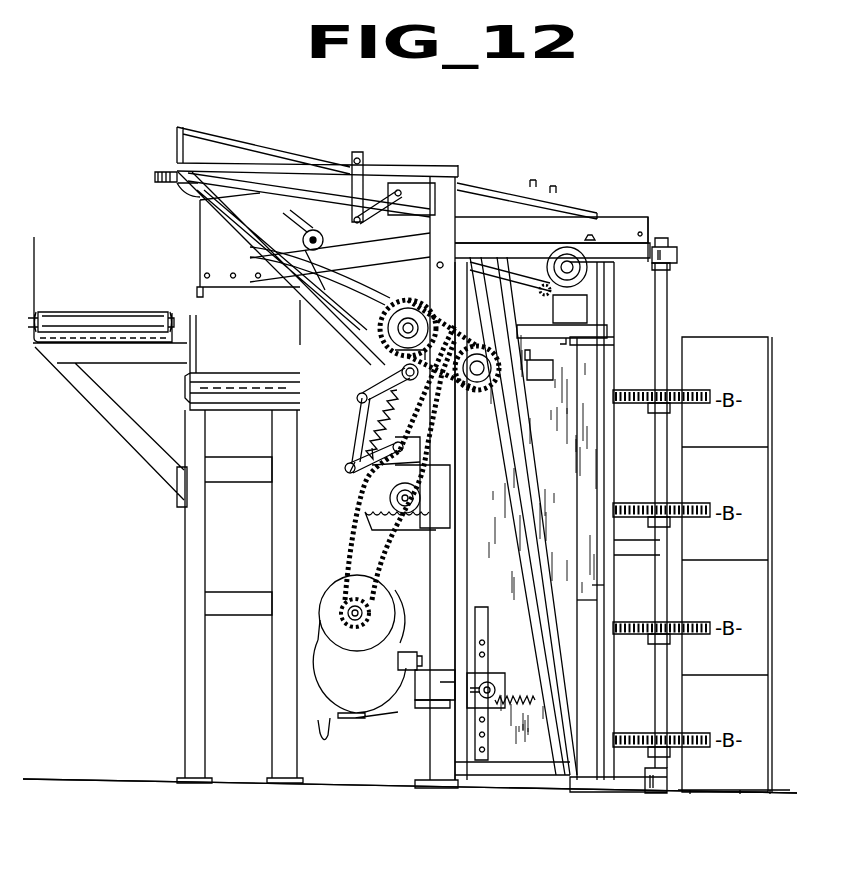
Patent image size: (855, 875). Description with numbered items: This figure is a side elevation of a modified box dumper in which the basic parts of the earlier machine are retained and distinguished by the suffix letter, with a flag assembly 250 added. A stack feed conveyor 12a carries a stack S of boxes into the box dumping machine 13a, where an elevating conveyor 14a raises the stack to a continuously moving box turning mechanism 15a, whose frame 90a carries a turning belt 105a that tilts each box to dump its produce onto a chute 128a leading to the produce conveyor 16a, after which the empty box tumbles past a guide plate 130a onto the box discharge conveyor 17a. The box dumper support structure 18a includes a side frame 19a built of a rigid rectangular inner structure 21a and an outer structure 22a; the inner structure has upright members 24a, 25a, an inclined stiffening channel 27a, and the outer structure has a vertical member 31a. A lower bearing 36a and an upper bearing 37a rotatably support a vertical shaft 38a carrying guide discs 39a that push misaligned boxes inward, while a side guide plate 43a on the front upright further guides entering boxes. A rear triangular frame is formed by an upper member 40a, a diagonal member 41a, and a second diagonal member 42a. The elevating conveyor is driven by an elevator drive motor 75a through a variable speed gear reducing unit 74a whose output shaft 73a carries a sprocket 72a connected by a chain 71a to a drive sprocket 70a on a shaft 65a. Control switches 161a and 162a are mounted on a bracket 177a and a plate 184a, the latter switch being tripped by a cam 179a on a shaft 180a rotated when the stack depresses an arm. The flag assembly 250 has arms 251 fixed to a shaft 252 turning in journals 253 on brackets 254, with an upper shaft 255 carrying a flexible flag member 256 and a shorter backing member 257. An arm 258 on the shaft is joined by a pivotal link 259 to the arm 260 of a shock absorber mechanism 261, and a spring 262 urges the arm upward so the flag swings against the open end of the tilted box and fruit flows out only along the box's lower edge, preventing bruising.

The stack feed conveyor 12a is at (780, 792).
The box dumping machine 13a is at (598, 228).
The elevating conveyor 14a is at (475, 745).
The box turning mechanism 15a is at (218, 128).
The produce conveyor 16a is at (205, 372).
The box discharge conveyor 17a is at (59, 307).
The box dumper support structure 18a is at (448, 165).
The side frame 19a is at (650, 222).
The rigid rectangular inner structure 21a is at (578, 489).
The outer structure 22a is at (622, 545).
The upright member 24a is at (447, 228).
The upright member 25a is at (593, 601).
The inclined stiffening channel 27a is at (520, 468).
The vertical member 31a is at (597, 588).
The lower bearing 36a is at (665, 782).
The upper bearing 37a is at (677, 255).
The vertical shaft 38a is at (668, 285).
The guide discs 39a is at (700, 510).
The upper member 40a is at (178, 168).
The diagonal member 41a is at (222, 212).
The second diagonal member 42a is at (413, 243).
The side guide plate 43a is at (538, 511).
The shaft 65a is at (392, 497).
The drive sprocket 70a is at (385, 510).
The chain 71a is at (378, 528).
The sprocket 72a is at (343, 613).
The output shaft 73a is at (345, 620).
The variable speed gear reducing unit 74a is at (367, 680).
The elevator drive motor 75a is at (400, 615).
The frame 90a is at (305, 152).
The belt 105a is at (190, 200).
The chute 128a is at (300, 322).
The guide plate 130a is at (207, 225).
The switch 161a is at (553, 370).
The switch 162a is at (440, 698).
The bracket 177a is at (443, 703).
The cam 179a is at (490, 682).
The shaft 180a is at (482, 708).
The plate 184a is at (587, 312).
The flag assembly 250 is at (315, 230).
The arms 251 is at (380, 300).
The shaft 252 is at (395, 375).
The journals 253 is at (402, 376).
The brackets 254 is at (403, 352).
The shaft 255 is at (307, 230).
The flexible flag member 256 is at (252, 245).
The backing member 257 is at (252, 258).
The arm 258 is at (372, 407).
The pivotal link 259 is at (358, 441).
The arm 260 is at (385, 450).
The shock absorber mechanism 261 is at (362, 460).
The spring 262 is at (354, 424).
The stack S is at (757, 340).